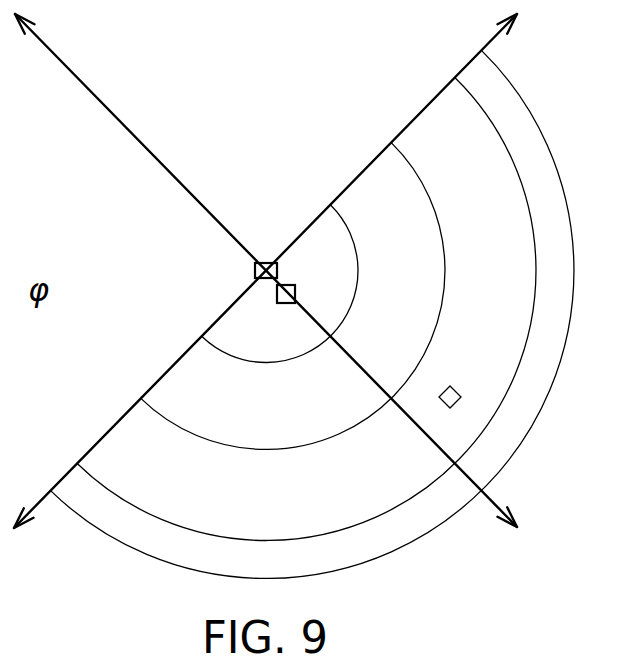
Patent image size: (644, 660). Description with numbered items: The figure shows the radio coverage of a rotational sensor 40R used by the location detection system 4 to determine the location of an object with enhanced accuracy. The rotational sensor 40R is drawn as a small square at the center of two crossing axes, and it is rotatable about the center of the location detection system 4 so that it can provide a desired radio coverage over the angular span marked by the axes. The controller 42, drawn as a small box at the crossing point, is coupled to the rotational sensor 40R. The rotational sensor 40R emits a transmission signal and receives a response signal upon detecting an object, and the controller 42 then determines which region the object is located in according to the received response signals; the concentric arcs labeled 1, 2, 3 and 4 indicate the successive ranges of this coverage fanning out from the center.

The controller 42 is at (263, 262).
The rotational sensor 40R is at (296, 294).
The zone 1 is at (280, 284).
The zone 2 is at (293, 296).
The zone 3 is at (306, 309).
The location detection system 4 is at (312, 314).